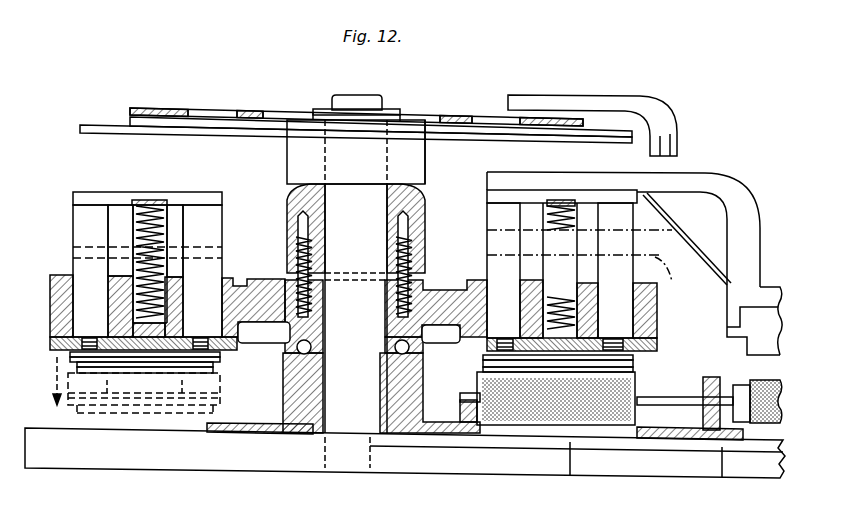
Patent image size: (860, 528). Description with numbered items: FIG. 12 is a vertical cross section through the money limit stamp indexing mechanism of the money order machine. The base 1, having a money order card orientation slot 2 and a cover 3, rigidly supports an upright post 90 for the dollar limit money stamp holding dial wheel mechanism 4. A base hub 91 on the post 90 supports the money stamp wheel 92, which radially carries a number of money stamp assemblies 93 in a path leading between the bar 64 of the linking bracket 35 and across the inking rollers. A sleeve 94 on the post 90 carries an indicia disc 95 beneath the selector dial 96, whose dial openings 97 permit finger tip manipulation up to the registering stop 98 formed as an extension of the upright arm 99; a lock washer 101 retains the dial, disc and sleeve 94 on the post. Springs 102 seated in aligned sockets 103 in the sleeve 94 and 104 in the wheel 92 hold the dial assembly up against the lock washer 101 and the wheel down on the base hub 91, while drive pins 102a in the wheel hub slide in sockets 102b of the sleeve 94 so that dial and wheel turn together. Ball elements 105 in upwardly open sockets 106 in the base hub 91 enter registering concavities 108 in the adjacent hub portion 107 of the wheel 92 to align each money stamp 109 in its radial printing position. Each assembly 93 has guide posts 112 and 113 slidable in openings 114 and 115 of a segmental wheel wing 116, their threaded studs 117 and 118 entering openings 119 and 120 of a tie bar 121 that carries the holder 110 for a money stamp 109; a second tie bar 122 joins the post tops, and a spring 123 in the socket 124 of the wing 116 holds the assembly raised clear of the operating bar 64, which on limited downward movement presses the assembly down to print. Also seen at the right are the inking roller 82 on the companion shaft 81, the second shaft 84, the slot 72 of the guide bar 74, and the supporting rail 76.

The base 1 is at (170, 465).
The money order card orientation slot 2 is at (405, 440).
The cover 3 is at (230, 430).
The dollar limit money stamp holding dial wheel mechanism 4 is at (168, 104).
The linking bracket 35 is at (768, 285).
The bar 64 is at (550, 173).
The slot 72 is at (703, 385).
The guide bar 74 is at (710, 376).
The rail 76 is at (466, 432).
The companion shaft 81 is at (470, 395).
The inking roller 82 is at (577, 418).
The shaft 84 is at (725, 401).
The upright post 90 is at (348, 95).
The base hub 91 is at (283, 402).
The money stamp wheel 92 is at (57, 280).
The money stamp assembly 93 is at (63, 186).
The sleeve 94 is at (417, 150).
The indicia disc 95 is at (108, 128).
The selector dial 96 is at (292, 117).
The dial opening 97 is at (202, 110).
The registering stop 98 is at (547, 100).
The upright arm 99 is at (678, 127).
The lock washer 101 is at (387, 107).
The spring 102 is at (296, 250).
The drive pin 102a is at (320, 217).
The socket 102b is at (317, 187).
The socket 103 is at (296, 240).
The socket 104 is at (290, 290).
The ball element 105 is at (424, 339).
The socket 106 is at (313, 349).
The hub portion 107 is at (284, 333).
The registering concavity 108 is at (323, 335).
The money stamp 109 is at (90, 372).
The holder 110 is at (77, 355).
The guide post 112 is at (75, 215).
The guide post 113 is at (222, 210).
The opening 114 is at (80, 280).
The opening 115 is at (183, 282).
The segmental wheel wing 116 is at (107, 308).
The threaded stud 117 is at (88, 338).
The threaded stud 118 is at (210, 353).
The opening 119 is at (502, 339).
The opening 120 is at (615, 343).
The tie bar 121 is at (133, 360).
The tie bar 122 is at (108, 192).
The spring 123 is at (163, 213).
The socket 124 is at (200, 270).